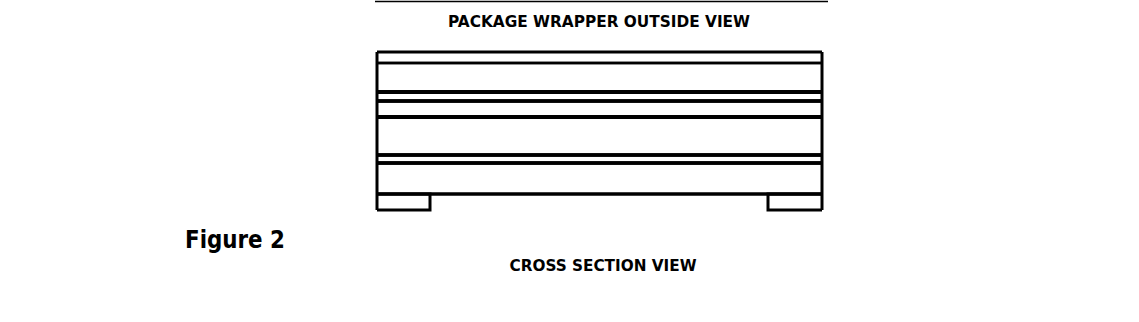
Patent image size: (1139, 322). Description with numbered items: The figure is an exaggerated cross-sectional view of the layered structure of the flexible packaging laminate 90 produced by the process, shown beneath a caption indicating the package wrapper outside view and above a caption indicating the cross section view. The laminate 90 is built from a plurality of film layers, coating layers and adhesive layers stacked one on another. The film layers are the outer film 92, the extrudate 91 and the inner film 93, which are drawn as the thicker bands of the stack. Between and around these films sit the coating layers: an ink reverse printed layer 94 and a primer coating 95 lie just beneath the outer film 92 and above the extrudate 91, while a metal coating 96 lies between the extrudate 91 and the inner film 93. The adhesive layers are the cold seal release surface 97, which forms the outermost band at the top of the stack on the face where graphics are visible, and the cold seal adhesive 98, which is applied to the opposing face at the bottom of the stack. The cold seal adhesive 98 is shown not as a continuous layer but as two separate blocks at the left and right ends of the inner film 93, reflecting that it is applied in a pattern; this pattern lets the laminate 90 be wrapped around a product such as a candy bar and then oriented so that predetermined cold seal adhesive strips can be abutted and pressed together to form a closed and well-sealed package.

The laminate 90 is at (853, 47).
The film layer 91 is at (374, 135).
The film layer 92 is at (374, 80).
The film layer 93 is at (374, 179).
The coating layer 94 is at (827, 97).
The coating layer 95 is at (827, 108).
The coating layer 96 is at (827, 160).
The adhesive layer 97 is at (374, 52).
The cold seal adhesive 98 is at (757, 209).